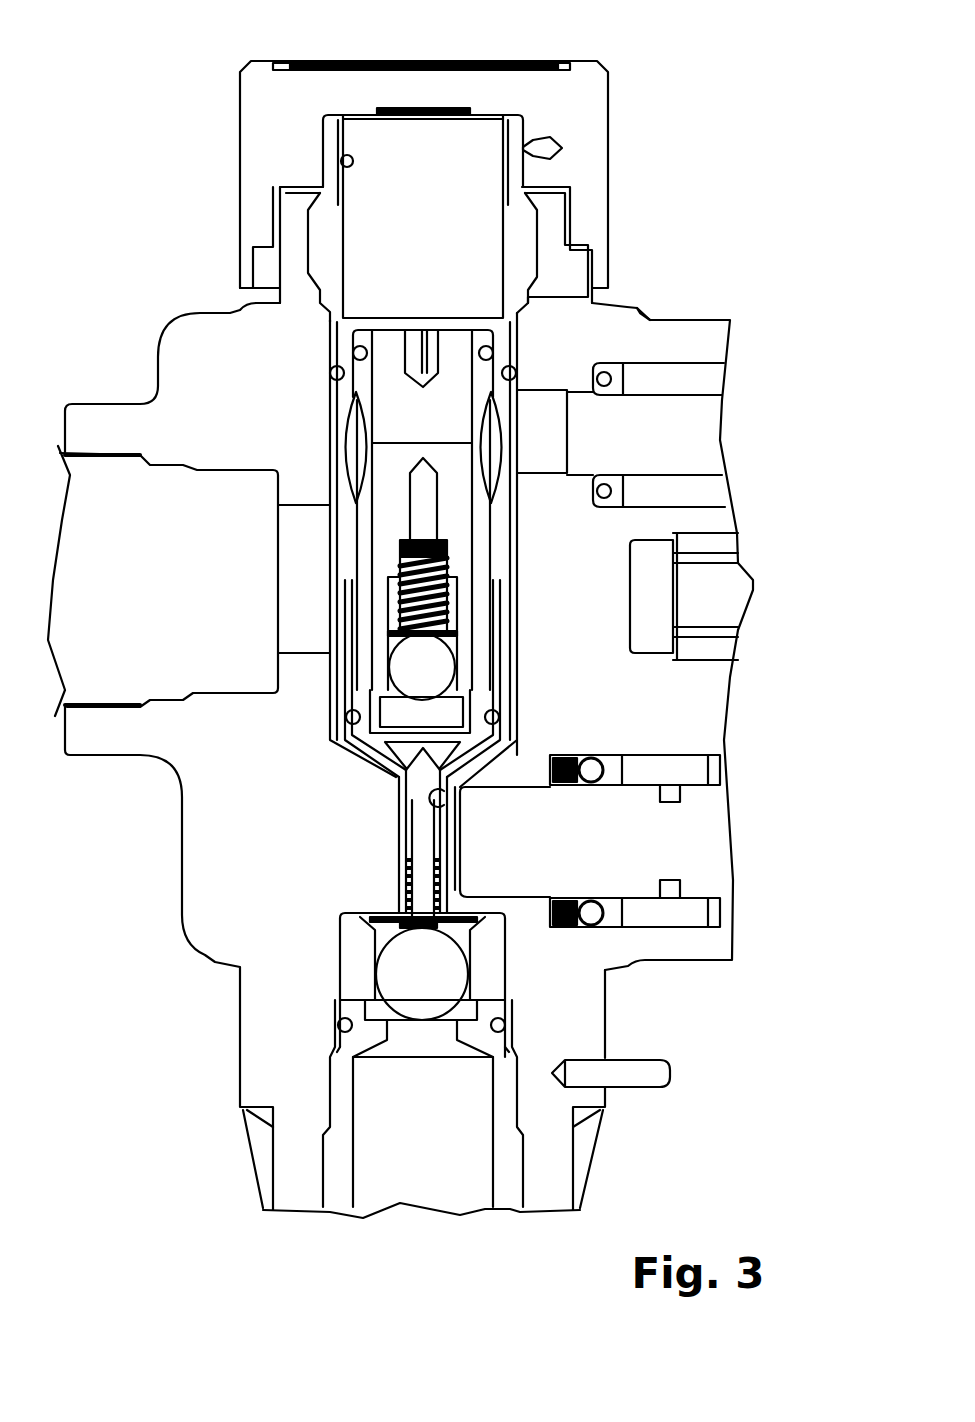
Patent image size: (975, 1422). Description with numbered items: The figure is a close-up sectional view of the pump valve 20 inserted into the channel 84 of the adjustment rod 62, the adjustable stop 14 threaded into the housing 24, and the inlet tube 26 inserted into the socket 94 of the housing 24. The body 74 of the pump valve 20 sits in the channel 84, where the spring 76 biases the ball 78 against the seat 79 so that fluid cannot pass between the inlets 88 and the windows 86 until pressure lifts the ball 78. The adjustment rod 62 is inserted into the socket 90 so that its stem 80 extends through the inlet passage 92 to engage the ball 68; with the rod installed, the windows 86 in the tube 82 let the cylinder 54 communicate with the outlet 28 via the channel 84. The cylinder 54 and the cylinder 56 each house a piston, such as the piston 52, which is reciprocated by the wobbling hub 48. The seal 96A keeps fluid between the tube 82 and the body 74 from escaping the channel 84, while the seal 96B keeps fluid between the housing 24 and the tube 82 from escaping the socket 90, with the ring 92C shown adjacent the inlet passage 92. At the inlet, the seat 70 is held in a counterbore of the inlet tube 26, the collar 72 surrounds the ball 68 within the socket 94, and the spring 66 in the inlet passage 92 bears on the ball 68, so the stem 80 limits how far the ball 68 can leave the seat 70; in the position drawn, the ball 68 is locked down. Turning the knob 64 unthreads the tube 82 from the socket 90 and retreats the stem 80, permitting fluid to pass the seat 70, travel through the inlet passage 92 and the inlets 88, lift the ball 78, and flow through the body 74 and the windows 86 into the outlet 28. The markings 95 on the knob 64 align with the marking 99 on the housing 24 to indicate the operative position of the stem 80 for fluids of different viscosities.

The adjustable stop 14 is at (626, 264).
The pump valve 20 is at (457, 328).
The housing 24 is at (202, 874).
The inlet tube 26 is at (398, 1160).
The outlet 28 is at (300, 542).
The hub 48 is at (397, 828).
The piston 52 is at (630, 447).
The cylinder 54 is at (515, 792).
The cylinder 56 is at (528, 464).
The adjustment rod 62 is at (498, 697).
The knob 64 is at (603, 110).
The spring 66 is at (397, 890).
The ball 68 is at (443, 977).
The seat 70 is at (497, 1025).
The collar 72 is at (357, 947).
The body 74 is at (392, 416).
The spring 76 is at (437, 627).
The ball 78 is at (440, 672).
The seat 79 is at (498, 718).
The stem 80 is at (423, 853).
The tube 82 is at (513, 237).
The channel 84 is at (345, 166).
The windows 86 is at (483, 450).
The inlets 88 is at (397, 760).
The socket 90 is at (590, 297).
The inlet passage 92 is at (443, 813).
The seal ring 92C is at (347, 717).
The socket 94 is at (512, 1090).
The markings 95 is at (330, 60).
The seal 96A is at (353, 355).
The seal 96B is at (332, 375).
The marking 99 is at (640, 317).